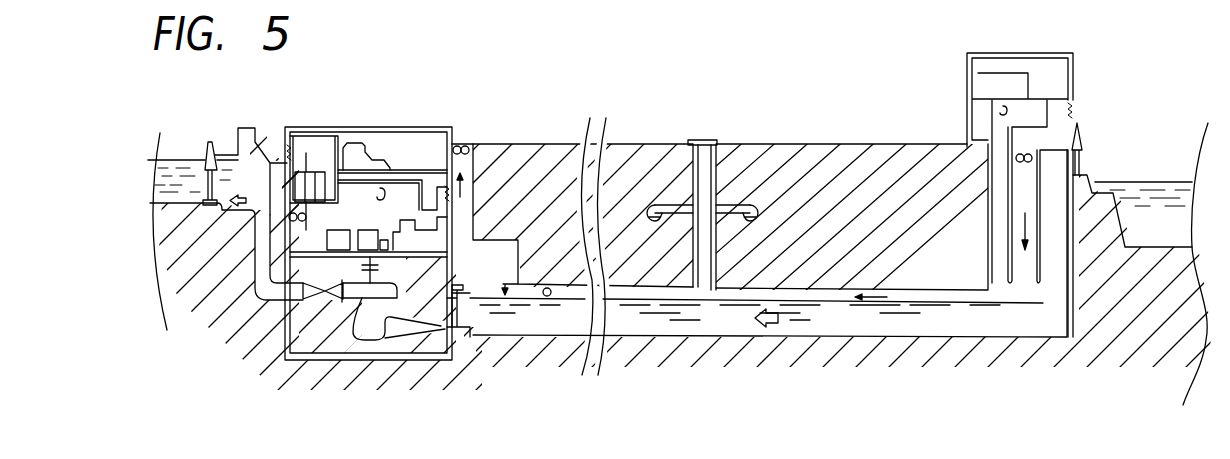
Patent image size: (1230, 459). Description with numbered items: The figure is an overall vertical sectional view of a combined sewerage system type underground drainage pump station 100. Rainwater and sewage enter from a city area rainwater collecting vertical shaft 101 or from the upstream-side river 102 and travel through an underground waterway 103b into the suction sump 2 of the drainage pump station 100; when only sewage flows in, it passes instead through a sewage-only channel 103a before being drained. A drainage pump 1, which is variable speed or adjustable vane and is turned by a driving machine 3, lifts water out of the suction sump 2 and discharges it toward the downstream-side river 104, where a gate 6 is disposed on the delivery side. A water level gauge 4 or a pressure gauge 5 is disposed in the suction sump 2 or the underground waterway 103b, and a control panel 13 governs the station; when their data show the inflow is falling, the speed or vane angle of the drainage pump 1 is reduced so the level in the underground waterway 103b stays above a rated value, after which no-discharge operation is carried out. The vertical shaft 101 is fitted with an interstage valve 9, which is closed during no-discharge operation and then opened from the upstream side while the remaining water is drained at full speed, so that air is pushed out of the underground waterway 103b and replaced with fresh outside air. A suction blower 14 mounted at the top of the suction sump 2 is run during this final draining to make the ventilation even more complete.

The drainage pump 1 is at (365, 310).
The suction sump 2 is at (502, 257).
The driving machine 3 is at (405, 243).
The water level gauge 4 is at (505, 300).
The pressure gauge 5 is at (547, 298).
The gate 6 is at (211, 140).
The interstage valve 9 is at (697, 140).
The control panel 13 is at (353, 157).
The suction blower 14 is at (457, 147).
The drainage pump station 100 is at (318, 333).
The vertical shaft 101 is at (708, 142).
The upstream-side river 102 is at (1150, 197).
The sewage-only channel 103a is at (745, 205).
The underground waterway 103b is at (838, 323).
The downstream-side river 104 is at (173, 173).